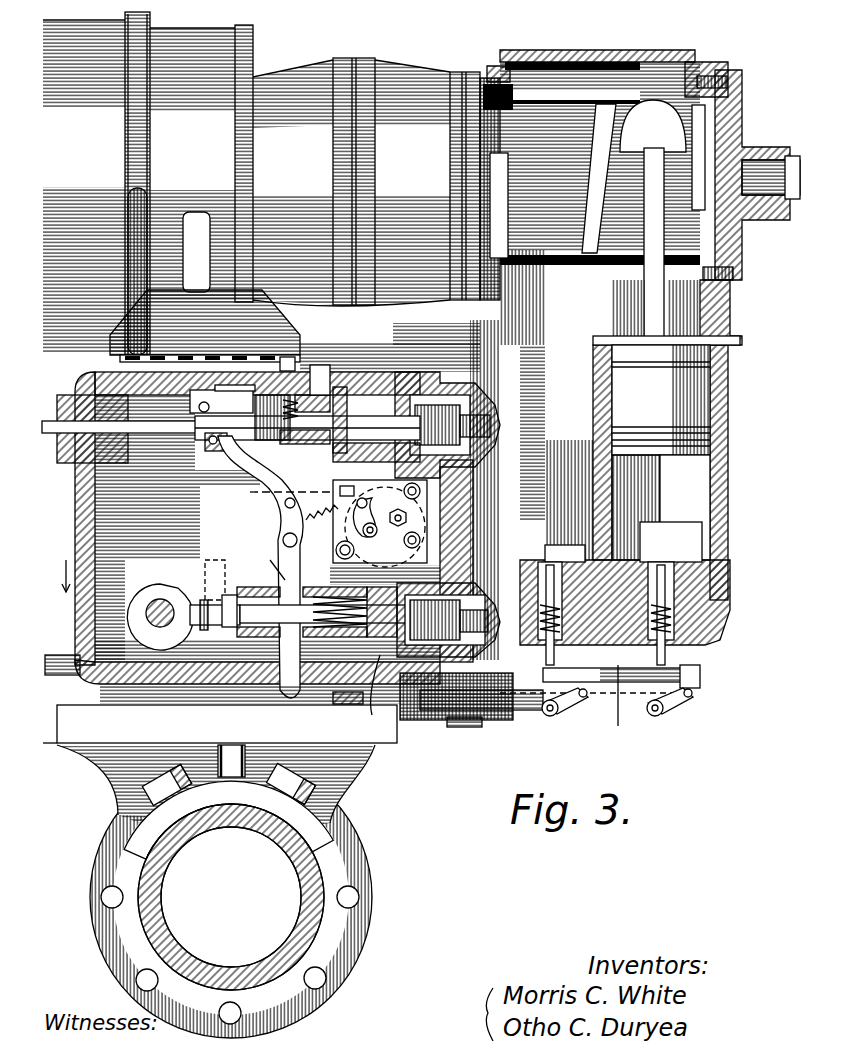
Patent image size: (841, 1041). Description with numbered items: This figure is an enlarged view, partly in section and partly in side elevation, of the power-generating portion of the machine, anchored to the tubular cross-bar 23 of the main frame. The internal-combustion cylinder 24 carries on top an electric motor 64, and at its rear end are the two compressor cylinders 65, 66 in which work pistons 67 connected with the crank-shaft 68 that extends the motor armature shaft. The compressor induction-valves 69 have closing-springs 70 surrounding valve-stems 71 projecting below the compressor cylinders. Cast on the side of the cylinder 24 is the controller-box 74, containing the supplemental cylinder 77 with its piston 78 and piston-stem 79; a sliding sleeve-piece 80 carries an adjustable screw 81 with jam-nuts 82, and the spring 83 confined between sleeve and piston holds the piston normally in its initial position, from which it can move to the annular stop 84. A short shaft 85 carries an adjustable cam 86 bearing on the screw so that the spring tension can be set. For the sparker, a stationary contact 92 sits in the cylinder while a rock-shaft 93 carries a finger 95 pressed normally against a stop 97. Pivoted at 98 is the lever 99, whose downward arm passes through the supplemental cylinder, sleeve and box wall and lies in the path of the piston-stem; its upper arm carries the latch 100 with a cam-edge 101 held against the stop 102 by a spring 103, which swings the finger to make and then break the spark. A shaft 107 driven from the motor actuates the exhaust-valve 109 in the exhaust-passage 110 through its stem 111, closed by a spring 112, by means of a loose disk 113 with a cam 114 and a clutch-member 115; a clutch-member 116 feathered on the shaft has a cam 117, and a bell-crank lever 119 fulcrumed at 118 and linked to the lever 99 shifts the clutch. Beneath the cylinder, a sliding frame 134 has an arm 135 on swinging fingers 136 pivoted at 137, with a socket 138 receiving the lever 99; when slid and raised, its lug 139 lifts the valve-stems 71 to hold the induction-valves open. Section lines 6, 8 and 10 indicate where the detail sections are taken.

The section line 6 is at (56, 573).
The section line 8 is at (50, 463).
The section line 10 is at (325, 493).
The cross-bar 23 is at (285, 850).
The internal-combustion cylinder 24 is at (62, 638).
The electric motor 64 is at (271, 183).
The compressor cylinder 65 is at (652, 468).
The compressor cylinder 66 is at (627, 500).
The compressor pistons 67 is at (590, 490).
The crank-shaft 68 is at (599, 178).
The induction-valves 69 is at (620, 581).
The closing-springs 70 is at (565, 632).
The valve-stems 71 is at (552, 656).
The controller-box 74 is at (88, 512).
The supplemental cylinder 77 is at (320, 630).
The piston 78 is at (340, 595).
The piston-stem 79 is at (320, 605).
The sliding sleeve-piece 80 is at (232, 594).
The adjustable screw 81 is at (196, 627).
The jam-nuts 82 is at (209, 570).
The spring 83 is at (429, 621).
The annular stop 84 is at (372, 696).
The short shaft 85 is at (150, 620).
The adjustable cam 86 is at (138, 585).
The stationary contact 92 is at (430, 508).
The rock-shaft 93 is at (352, 565).
The finger 95 is at (378, 521).
The stop 97 is at (355, 519).
The pivot 98 is at (283, 540).
The lever 99 is at (262, 561).
The swinging finger or latch 100 is at (312, 498).
The cam-edge 101 is at (345, 490).
The stop 102 is at (322, 522).
The spring 103 is at (258, 470).
The shaft 107 is at (103, 440).
The exhaust-valve 109 is at (307, 420).
The exhaust-passage 110 is at (420, 395).
The exhaust-valve stem 111 is at (350, 445).
The spring 112 is at (322, 392).
The disk 113 is at (268, 410).
The cam 114 is at (290, 440).
The clutch-member 115 is at (285, 357).
The clutch-member 116 is at (234, 446).
The cam 117 is at (246, 567).
The fulcrum 118 is at (199, 407).
The bell-crank lever 119 is at (218, 388).
The sliding frame 134 is at (700, 678).
The arm 135 is at (425, 695).
The swinging fingers 136 is at (685, 705).
The pivot 137 is at (547, 716).
The socket 138 is at (318, 705).
The arm or lug 139 is at (595, 708).